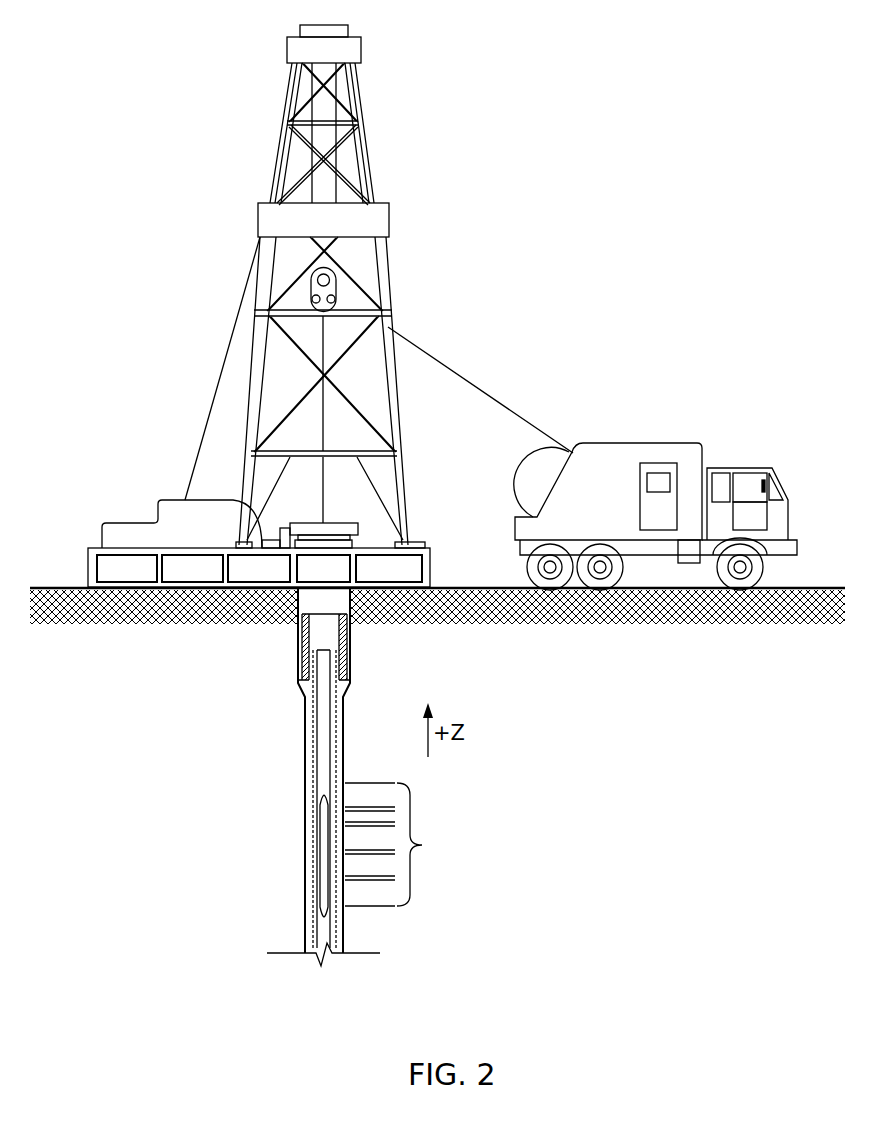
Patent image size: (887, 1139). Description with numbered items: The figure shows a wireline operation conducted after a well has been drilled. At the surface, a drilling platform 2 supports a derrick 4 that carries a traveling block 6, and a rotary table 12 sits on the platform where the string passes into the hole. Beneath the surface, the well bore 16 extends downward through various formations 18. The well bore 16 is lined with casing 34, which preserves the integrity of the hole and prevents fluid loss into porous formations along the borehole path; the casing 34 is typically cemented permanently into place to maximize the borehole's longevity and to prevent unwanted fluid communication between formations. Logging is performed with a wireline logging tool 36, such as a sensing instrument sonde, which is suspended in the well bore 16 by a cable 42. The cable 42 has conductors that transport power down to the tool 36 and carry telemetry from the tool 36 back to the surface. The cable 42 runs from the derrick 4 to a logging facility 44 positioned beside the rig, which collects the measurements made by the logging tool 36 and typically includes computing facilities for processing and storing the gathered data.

The drilling platform 2 is at (430, 570).
The derrick 4 is at (401, 426).
The traveling block 6 is at (303, 297).
The rotary table 12 is at (358, 528).
The well bore 16 is at (341, 753).
The formations 18 is at (401, 844).
The casing 34 is at (312, 810).
The wireline logging tool 36 is at (317, 858).
The cable 42 is at (481, 388).
The logging facility 44 is at (637, 443).